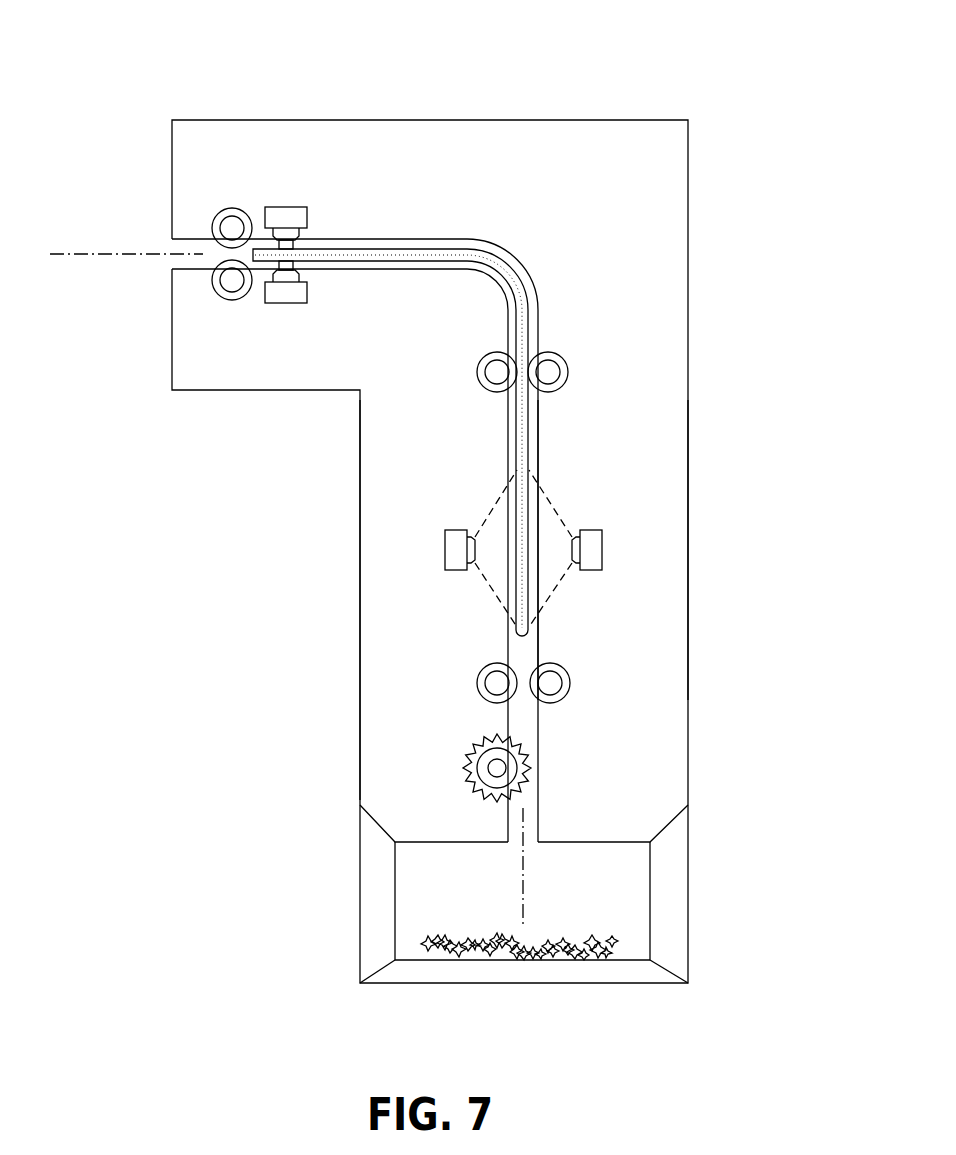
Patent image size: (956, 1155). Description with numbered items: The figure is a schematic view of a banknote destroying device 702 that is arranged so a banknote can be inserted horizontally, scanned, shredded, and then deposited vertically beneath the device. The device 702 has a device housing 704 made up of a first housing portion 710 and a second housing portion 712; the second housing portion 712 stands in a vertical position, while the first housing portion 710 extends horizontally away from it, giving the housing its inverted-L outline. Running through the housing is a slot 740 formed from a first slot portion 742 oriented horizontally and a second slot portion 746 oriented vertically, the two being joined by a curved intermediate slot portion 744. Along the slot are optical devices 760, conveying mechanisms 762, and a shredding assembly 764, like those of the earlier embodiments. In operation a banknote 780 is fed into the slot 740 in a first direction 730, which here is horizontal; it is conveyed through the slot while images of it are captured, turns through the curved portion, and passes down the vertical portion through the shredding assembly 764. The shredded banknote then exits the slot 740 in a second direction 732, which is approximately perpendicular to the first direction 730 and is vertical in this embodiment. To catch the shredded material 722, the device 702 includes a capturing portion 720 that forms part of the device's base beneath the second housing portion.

The first housing portion 710 is at (436, 493).
The device 702 is at (720, 370).
The device housing 704 is at (688, 530).
The second housing portion 712 is at (340, 607).
The capturing portion 720 is at (376, 900).
The cut pieces / shavings 722 is at (585, 930).
The first direction 730 is at (92, 250).
The second direction 732 is at (518, 880).
The slot 740 is at (408, 499).
The first slot portion 742 is at (407, 238).
The curved intermediate slot portion 744 is at (520, 262).
The second slot portion 746 is at (538, 433).
The optical devices 760 is at (283, 207).
The conveying mechanisms 762 is at (572, 372).
The shredding assembly 764 is at (478, 743).
The banknote 780 is at (470, 248).